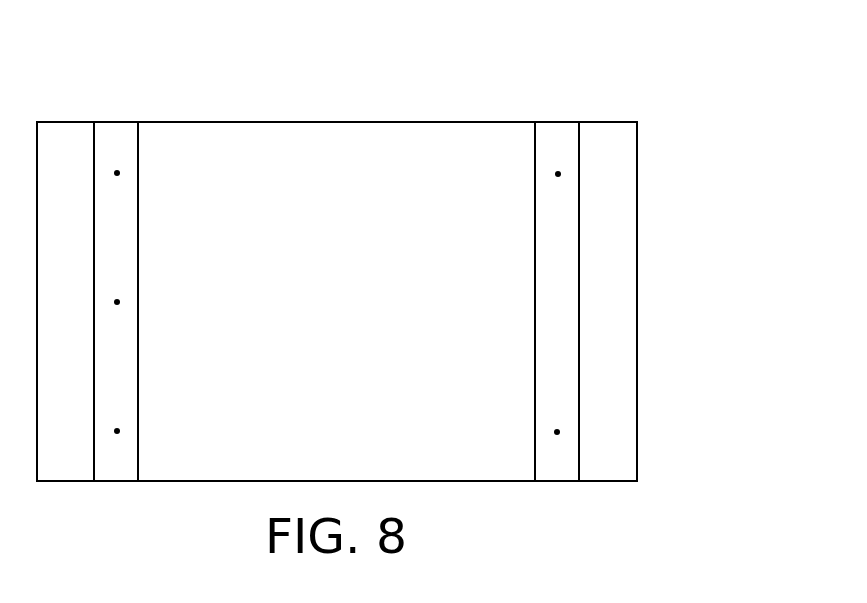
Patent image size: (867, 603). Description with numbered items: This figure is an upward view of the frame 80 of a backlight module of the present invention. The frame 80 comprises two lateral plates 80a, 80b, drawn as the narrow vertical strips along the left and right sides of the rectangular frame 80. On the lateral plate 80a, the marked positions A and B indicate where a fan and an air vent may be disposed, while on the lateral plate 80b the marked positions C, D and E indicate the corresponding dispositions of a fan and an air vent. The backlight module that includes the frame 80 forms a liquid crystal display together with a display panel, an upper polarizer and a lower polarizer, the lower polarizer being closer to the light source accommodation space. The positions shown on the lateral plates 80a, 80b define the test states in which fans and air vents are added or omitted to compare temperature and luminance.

The frame 80 is at (703, 38).
The lateral plate 80a is at (558, 132).
The lateral plate 80b is at (117, 132).